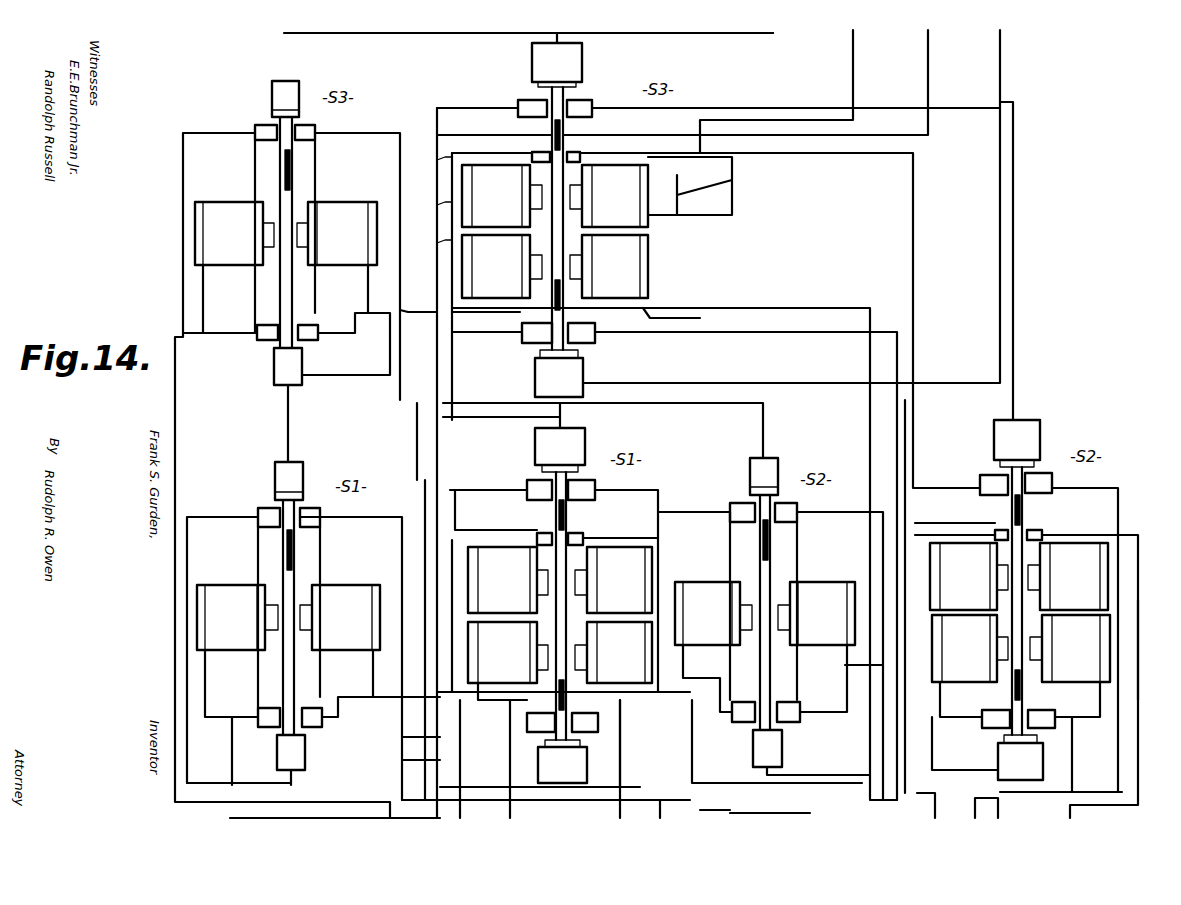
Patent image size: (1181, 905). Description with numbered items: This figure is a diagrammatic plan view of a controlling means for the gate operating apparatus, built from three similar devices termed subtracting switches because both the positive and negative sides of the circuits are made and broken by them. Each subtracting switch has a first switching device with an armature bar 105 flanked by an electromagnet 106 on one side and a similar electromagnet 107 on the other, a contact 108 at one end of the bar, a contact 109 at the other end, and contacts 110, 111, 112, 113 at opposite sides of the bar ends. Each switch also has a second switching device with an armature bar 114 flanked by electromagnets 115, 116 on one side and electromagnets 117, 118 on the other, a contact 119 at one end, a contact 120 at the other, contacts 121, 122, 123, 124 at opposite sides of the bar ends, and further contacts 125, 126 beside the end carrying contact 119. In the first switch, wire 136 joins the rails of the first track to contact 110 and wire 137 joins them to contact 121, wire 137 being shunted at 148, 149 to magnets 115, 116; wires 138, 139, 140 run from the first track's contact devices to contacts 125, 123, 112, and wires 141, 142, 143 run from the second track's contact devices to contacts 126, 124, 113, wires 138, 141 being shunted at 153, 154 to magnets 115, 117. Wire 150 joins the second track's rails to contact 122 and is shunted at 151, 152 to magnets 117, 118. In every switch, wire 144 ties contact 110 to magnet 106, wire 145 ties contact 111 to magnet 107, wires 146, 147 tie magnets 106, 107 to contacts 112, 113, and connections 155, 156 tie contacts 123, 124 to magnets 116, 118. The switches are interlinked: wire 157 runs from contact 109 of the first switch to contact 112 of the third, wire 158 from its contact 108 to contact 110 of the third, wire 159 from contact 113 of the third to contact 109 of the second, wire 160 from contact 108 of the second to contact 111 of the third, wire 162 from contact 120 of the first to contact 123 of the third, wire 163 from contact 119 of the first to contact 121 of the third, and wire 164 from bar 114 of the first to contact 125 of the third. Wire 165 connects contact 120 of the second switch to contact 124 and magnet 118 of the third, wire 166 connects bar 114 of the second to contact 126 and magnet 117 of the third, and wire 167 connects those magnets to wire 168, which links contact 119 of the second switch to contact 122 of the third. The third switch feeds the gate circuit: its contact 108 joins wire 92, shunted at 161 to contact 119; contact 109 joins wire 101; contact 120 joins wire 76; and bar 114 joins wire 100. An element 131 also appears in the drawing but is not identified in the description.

The wire 76 is at (1000, 48).
The wire 92 is at (725, 45).
The wire 100 is at (853, 46).
The wire 101 is at (928, 50).
The armature bar 105 is at (292, 195).
The electromagnet 106 is at (473, 426).
The electromagnet 107 is at (576, 426).
The contact 108 is at (299, 96).
The contact 109 is at (274, 370).
The contact 110 is at (258, 125).
The contact 111 is at (315, 132).
The contact 112 is at (265, 325).
The contact 113 is at (305, 325).
The armature bar 114 is at (565, 248).
The electromagnet 115 is at (735, 389).
The electromagnet 116 is at (735, 459).
The electromagnet 117 is at (839, 389).
The electromagnet 118 is at (840, 459).
The contact 119 is at (786, 252).
The contact 120 is at (789, 566).
The contact 121 is at (518, 102).
The contact 122 is at (592, 102).
The contact 123 is at (522, 337).
The contact 124 is at (585, 343).
The contact 125 is at (520, 150).
The contact 126 is at (580, 155).
The conductor 131 is at (1077, 699).
The wire 136 is at (190, 552).
The wire 137 is at (425, 480).
The wire 138 is at (478, 525).
The wire 139 is at (510, 748).
The wire 140 is at (232, 750).
The wire 141 is at (640, 760).
The wire 142 is at (1080, 752).
The wire 143 is at (345, 702).
The wire 144 is at (255, 152).
The wire 145 is at (315, 158).
The wire 146 is at (205, 300).
The wire 147 is at (368, 278).
The shunt 148 is at (437, 160).
The shunt 149 is at (437, 243).
The wire 150 is at (655, 490).
The shunt 151 is at (672, 560).
The shunt 152 is at (675, 612).
The shunt 153 is at (437, 205).
The shunt 154 is at (652, 595).
The connection 155 is at (470, 312).
The connection 156 is at (655, 312).
The wire 157 is at (178, 475).
The wire 158 is at (180, 150).
The wire 159 is at (752, 308).
The wire 160 is at (400, 133).
The shunt 161 is at (528, 43).
The wire 162 is at (417, 432).
The wire 163 is at (418, 294).
The wire 164 is at (452, 392).
The wire 165 is at (812, 332).
The wire 166 is at (913, 185).
The wire 167 is at (732, 180).
The wire 168 is at (770, 108).